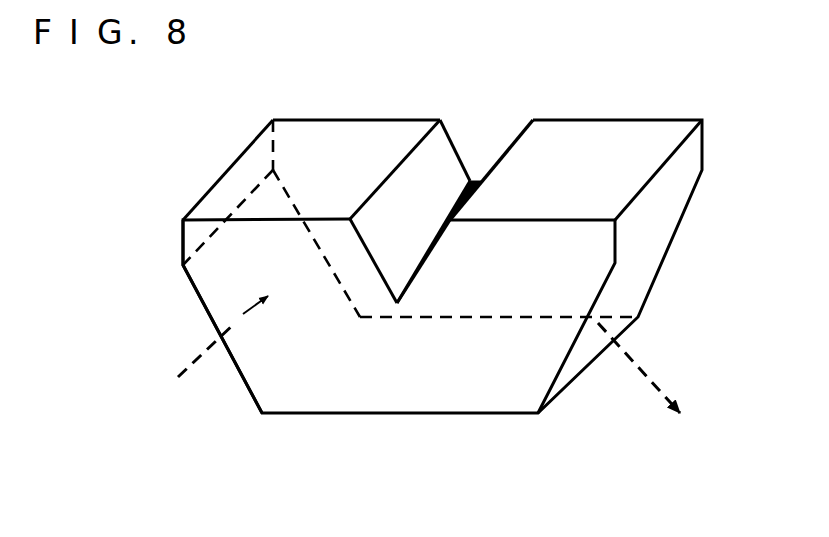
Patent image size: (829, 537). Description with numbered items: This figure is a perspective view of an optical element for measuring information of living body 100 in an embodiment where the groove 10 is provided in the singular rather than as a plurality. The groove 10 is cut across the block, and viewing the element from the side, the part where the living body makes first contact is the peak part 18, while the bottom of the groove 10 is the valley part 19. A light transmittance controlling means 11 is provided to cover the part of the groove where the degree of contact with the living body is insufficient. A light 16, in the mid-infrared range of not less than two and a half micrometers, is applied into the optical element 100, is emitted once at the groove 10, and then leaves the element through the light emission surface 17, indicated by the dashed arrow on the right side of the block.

The groove 10 is at (472, 130).
The light transmittance controlling means 11 is at (386, 299).
The light 16 is at (175, 390).
The light emission surface 17 is at (587, 352).
The peak part 18 is at (413, 142).
The valley part 19 is at (399, 312).
The optical element for measuring information of living body 100 is at (205, 279).